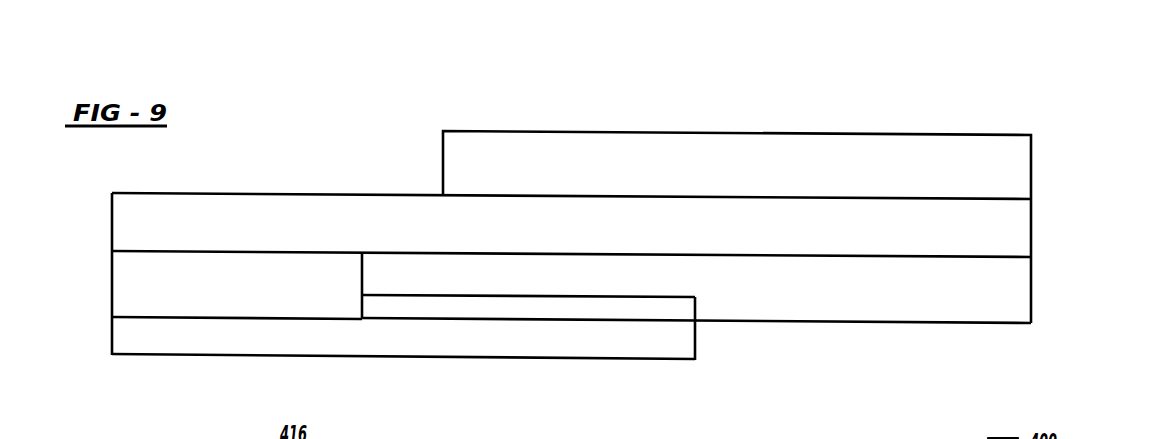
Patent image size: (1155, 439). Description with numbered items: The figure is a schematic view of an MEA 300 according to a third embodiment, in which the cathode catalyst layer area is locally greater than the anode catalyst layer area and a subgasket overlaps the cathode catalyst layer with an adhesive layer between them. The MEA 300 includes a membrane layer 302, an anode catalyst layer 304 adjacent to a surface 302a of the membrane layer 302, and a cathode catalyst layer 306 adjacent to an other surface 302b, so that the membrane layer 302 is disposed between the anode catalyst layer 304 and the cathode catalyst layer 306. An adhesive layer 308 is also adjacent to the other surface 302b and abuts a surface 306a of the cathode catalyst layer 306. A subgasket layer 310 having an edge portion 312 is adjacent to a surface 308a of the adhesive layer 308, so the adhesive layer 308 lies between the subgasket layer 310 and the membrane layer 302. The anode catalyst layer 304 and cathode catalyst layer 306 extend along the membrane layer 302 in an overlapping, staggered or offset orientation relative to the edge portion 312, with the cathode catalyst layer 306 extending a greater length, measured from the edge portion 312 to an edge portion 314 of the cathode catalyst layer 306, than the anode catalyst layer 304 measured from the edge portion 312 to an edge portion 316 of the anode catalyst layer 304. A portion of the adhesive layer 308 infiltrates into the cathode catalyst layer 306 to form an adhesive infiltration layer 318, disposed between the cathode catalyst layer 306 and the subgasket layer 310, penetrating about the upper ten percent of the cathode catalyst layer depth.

The MEA 300 is at (948, 91).
The membrane layer 302 is at (1009, 228).
The surface of the membrane layer 302a is at (720, 198).
The other surface of the membrane layer 302b is at (929, 255).
The anode catalyst layer 304 is at (1008, 169).
The cathode catalyst layer 306 is at (1008, 283).
The surface of the cathode catalyst layer 306a is at (363, 273).
The adhesive layer 308 is at (135, 280).
The surface of the adhesive layer 308a is at (260, 318).
The subgasket layer 310 is at (133, 335).
The edge portion of the subgasket layer 312 is at (696, 341).
The edge portion of the cathode catalyst layer 314 is at (358, 285).
The edge portion of the anode catalyst layer 316 is at (443, 162).
The adhesive infiltration layer 318 is at (542, 309).